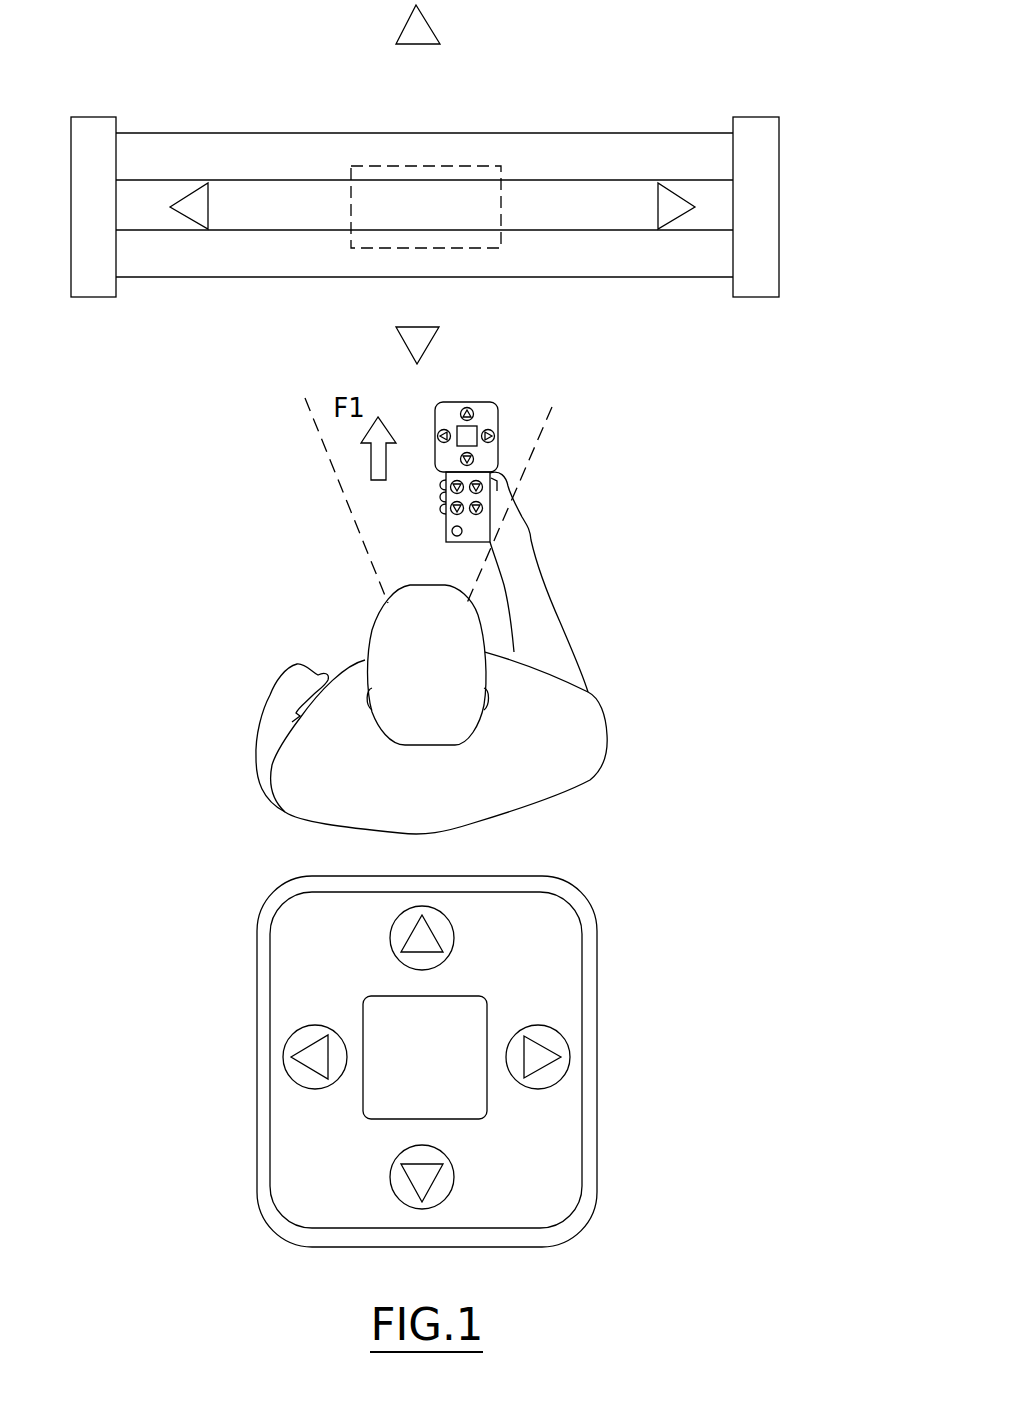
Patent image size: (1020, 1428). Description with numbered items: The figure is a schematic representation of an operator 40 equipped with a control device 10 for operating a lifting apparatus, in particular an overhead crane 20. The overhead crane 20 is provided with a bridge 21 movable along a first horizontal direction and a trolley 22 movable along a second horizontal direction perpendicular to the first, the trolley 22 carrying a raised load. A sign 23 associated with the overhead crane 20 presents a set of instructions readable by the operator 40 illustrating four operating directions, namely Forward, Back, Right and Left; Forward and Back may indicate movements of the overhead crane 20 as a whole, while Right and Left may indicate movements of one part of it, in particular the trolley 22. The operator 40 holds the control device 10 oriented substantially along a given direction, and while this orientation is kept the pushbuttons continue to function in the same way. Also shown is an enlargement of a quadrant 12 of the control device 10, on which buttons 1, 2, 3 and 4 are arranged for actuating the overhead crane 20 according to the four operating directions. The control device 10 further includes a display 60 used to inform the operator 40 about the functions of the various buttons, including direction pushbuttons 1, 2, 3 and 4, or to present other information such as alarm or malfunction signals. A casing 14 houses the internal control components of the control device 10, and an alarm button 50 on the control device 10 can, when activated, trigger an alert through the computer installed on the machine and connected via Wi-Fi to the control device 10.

The button 1 is at (467, 408).
The button 2 is at (541, 1089).
The button 3 is at (391, 1183).
The button 4 is at (315, 1026).
The control device 10 is at (528, 388).
The quadrant 12 is at (257, 1062).
The casing 14 is at (446, 520).
The overhead crane 20 is at (640, 65).
The bridge 21 is at (779, 205).
The trolley 22 is at (377, 248).
The sign 23 is at (405, 25).
The operator 40 is at (650, 653).
The alarm button 50 is at (480, 510).
The display 60 is at (487, 1013).